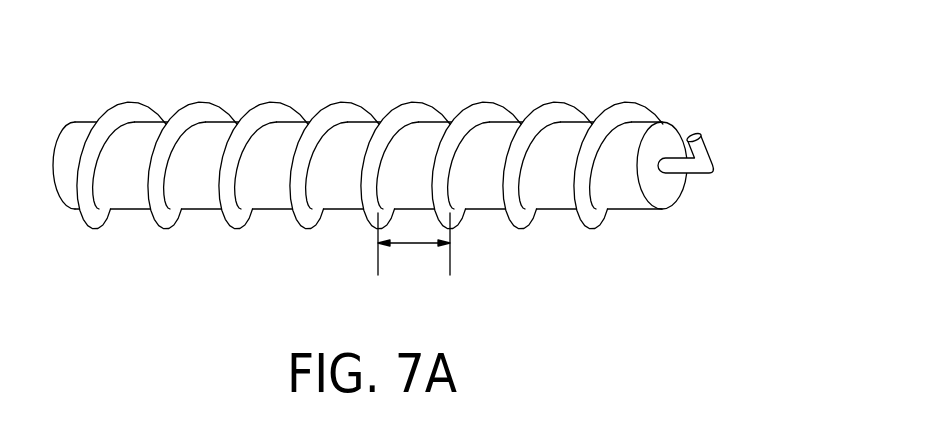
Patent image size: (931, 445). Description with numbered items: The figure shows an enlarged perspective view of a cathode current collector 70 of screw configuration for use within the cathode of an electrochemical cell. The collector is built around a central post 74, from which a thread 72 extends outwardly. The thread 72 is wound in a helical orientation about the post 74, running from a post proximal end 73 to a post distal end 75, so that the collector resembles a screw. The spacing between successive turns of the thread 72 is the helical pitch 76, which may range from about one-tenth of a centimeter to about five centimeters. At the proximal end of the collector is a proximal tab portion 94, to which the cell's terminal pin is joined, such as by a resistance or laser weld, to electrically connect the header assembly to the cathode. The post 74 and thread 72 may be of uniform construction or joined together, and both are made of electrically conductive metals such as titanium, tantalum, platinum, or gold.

The cathode current collector 70 is at (420, 163).
The thread 72 is at (520, 213).
The post proximal end 73 is at (370, 159).
The post 74 is at (370, 177).
The post distal end 75 is at (77, 143).
The helical pitch 76 is at (414, 244).
The proximal tab portion 94 is at (704, 150).